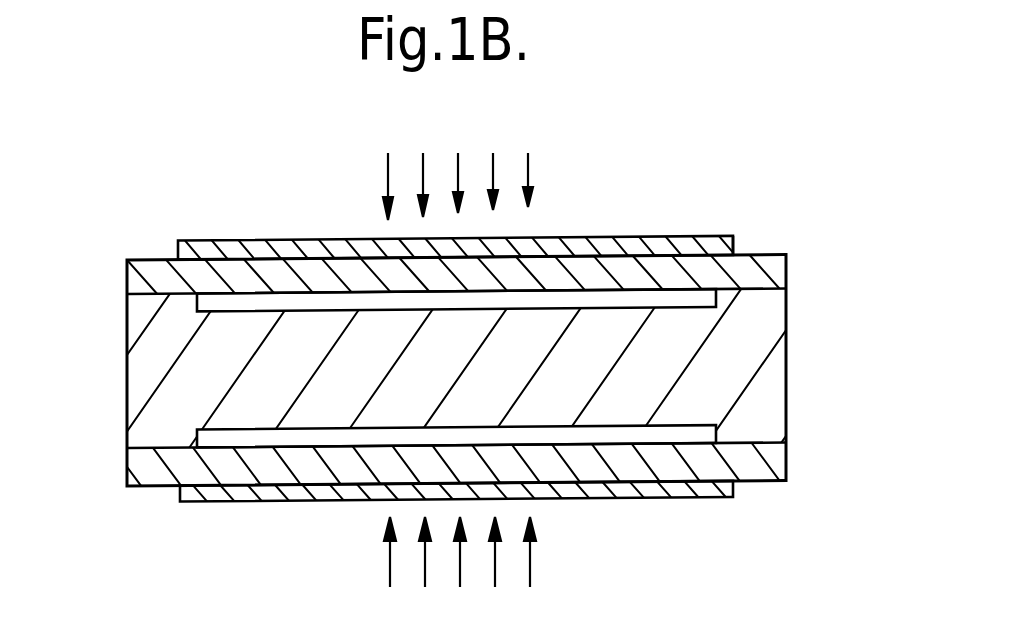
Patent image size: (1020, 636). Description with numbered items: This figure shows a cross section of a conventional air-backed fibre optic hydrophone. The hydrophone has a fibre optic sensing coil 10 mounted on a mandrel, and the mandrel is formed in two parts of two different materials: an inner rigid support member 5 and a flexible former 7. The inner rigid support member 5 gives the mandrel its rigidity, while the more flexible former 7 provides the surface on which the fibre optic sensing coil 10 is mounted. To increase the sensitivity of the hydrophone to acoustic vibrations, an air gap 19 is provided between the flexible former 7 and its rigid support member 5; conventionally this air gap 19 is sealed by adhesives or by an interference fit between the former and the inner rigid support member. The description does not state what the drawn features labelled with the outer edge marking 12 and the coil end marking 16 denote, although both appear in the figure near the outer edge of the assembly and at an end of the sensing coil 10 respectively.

The piezoelectric body 5 is at (787, 347).
The insulating layer 7 is at (773, 270).
The outer layer 10 is at (603, 238).
The housing 12 is at (127, 350).
The layer end 16 is at (737, 248).
The electrode 19 is at (223, 300).